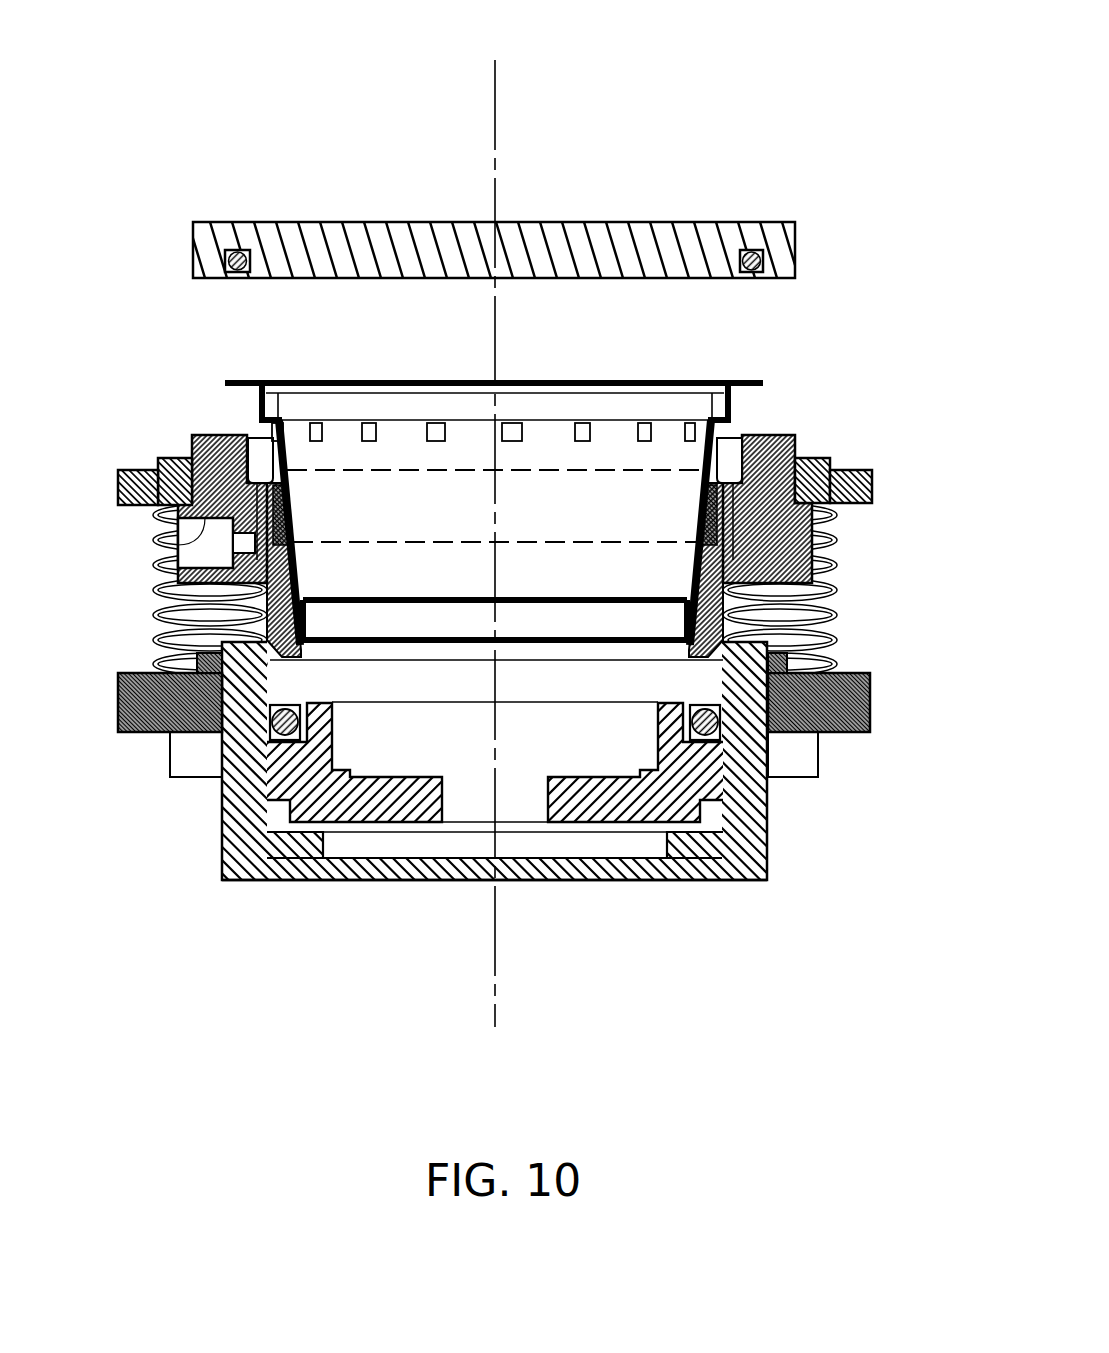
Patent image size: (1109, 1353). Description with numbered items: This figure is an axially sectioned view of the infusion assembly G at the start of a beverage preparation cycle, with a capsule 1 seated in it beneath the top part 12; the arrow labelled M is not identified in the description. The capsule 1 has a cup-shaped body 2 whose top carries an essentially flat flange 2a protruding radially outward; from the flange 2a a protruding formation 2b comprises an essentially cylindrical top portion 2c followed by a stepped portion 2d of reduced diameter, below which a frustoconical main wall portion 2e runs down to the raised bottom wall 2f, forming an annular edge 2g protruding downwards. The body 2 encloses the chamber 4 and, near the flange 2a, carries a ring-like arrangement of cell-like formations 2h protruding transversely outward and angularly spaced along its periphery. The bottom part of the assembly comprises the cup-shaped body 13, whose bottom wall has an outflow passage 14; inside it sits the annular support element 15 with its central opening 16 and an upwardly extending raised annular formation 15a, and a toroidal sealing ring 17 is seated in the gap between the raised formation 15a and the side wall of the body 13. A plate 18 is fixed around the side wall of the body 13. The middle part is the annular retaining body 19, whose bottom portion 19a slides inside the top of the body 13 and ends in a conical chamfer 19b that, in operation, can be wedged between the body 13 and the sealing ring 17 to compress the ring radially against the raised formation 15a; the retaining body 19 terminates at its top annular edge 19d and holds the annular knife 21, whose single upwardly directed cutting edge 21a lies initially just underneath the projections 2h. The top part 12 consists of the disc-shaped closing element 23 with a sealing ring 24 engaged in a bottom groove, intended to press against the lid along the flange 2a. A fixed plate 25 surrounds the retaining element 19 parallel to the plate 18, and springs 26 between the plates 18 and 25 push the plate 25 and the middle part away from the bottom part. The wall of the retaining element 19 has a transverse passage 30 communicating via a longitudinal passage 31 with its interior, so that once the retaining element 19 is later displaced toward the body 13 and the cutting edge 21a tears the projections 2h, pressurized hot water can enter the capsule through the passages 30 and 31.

The capsule 1 is at (766, 368).
The cup-shaped body 2 is at (816, 582).
The flanged formation 2a is at (250, 377).
The protruding formation 2b is at (250, 415).
The cylindrical top portion 2c is at (290, 405).
The stepped portion 2d is at (662, 440).
The frustoconical main wall portion 2e is at (460, 488).
The raised bottom wall 2f is at (455, 598).
The annular edge 2g is at (318, 628).
The formations 2h is at (578, 432).
The chamber 4 is at (524, 520).
The top part 12 is at (186, 245).
The cup-shaped body 13 is at (775, 790).
The outflow passage 14 is at (735, 846).
The support element 15 is at (370, 832).
The raised annular formation 15a is at (517, 736).
The central opening 16 is at (450, 802).
The toroidal sealing ring 17 is at (232, 742).
The plate 18 is at (872, 706).
The annular retaining body 19 is at (195, 450).
The bottom portion 19a is at (682, 616).
The conical chamfer 19b is at (702, 656).
The top annular edge 19d is at (762, 434).
The annular knife 21 is at (292, 512).
The cutting edge 21a is at (620, 452).
The closing element 23 is at (555, 245).
The sealing ring 24 is at (752, 276).
The fixed plate 25 is at (873, 490).
The springs 26 is at (878, 608).
The transverse passage 30 is at (150, 533).
The longitudinal passage 31 is at (150, 507).
The infusion assembly G is at (292, 212).
The main unit M is at (724, 166).